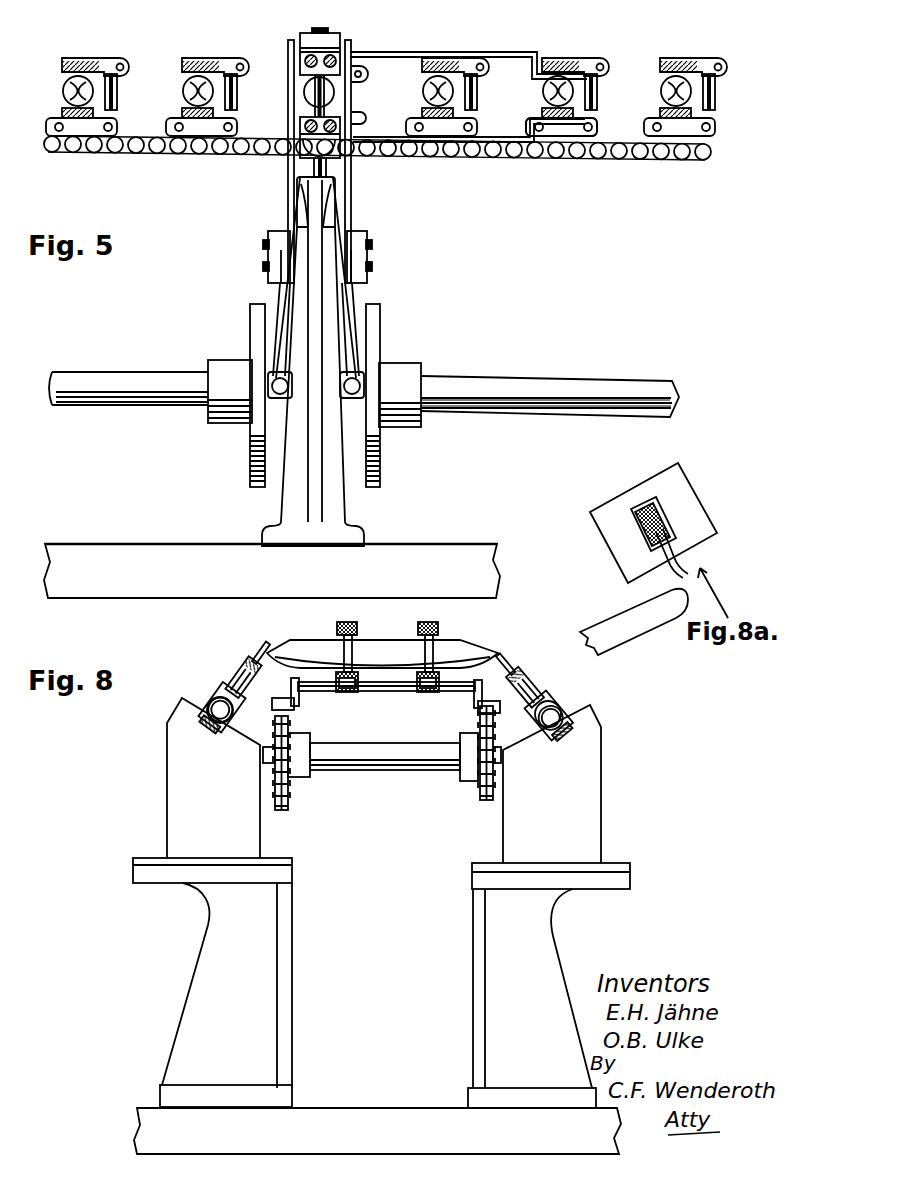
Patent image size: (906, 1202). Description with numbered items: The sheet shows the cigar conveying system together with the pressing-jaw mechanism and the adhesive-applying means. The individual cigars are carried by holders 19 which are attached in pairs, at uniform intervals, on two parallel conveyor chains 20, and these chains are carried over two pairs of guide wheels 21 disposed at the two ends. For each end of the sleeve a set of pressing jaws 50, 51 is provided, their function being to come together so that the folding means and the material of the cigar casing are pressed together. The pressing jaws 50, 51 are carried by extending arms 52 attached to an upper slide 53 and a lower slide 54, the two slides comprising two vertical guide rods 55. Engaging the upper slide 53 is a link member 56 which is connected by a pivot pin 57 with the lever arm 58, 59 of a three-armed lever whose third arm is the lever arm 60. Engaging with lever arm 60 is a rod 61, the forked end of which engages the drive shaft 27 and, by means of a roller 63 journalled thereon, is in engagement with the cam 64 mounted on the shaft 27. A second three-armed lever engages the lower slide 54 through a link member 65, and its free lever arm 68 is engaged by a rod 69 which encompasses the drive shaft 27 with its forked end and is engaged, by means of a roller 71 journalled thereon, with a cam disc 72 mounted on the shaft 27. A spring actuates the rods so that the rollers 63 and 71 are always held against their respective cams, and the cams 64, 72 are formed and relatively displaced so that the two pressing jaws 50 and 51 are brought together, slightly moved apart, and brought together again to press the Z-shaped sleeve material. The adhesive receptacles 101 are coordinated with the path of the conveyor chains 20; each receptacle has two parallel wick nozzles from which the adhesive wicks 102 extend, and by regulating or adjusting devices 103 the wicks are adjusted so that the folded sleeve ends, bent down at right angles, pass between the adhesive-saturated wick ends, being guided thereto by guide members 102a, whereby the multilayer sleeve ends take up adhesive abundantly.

In FIG. 5, the holders 19 is at (95, 62).
In FIG. 8, the holders 19 is at (358, 628).
In FIG. 5, the conveyor chains 20 is at (135, 146).
In FIG. 8, the conveyor chains 20 is at (294, 705).
In FIG. 8, the guide wheels 21 is at (291, 806).
In FIG. 5, the drive shaft 27 is at (466, 388).
In FIG. 5, the pressing jaw 50 is at (541, 75).
In FIG. 5, the pressing jaw 51 is at (567, 128).
In FIG. 5, the extending arms 52 is at (405, 52).
In FIG. 5, the upper slide 53 is at (328, 43).
In FIG. 5, the lower slide 54 is at (303, 138).
In FIG. 5, the vertical guide rods 55 is at (315, 166).
In FIG. 5, the link member 56 is at (289, 87).
In FIG. 5, the pivot pin 57 is at (368, 248).
In FIG. 5, the lever arm 58 is at (353, 235).
In FIG. 5, the lever arm 59 is at (353, 267).
In FIG. 5, the lever arm 60 is at (353, 300).
In FIG. 5, the rod 61 is at (345, 396).
In FIG. 5, the roller 63 is at (373, 410).
In FIG. 5, the cam 64 is at (372, 340).
In FIG. 5, the link member 65 is at (349, 187).
In FIG. 5, the lever arm 68 is at (275, 287).
In FIG. 5, the rod 69 is at (284, 378).
In FIG. 5, the roller 71 is at (255, 419).
In FIG. 5, the cam disc 72 is at (258, 317).
In FIG. 8A, the adhesive receptacles 101 is at (686, 494).
In FIG. 8, the adhesive receptacles 101 is at (178, 737).
In FIG. 8A, the adhesive wicks 102 is at (663, 528).
In FIG. 8, the adhesive wicks 102 is at (249, 670).
In FIG. 8A, the guide members 102a is at (672, 548).
In FIG. 8, the regulating or adjusting devices 103 is at (215, 702).